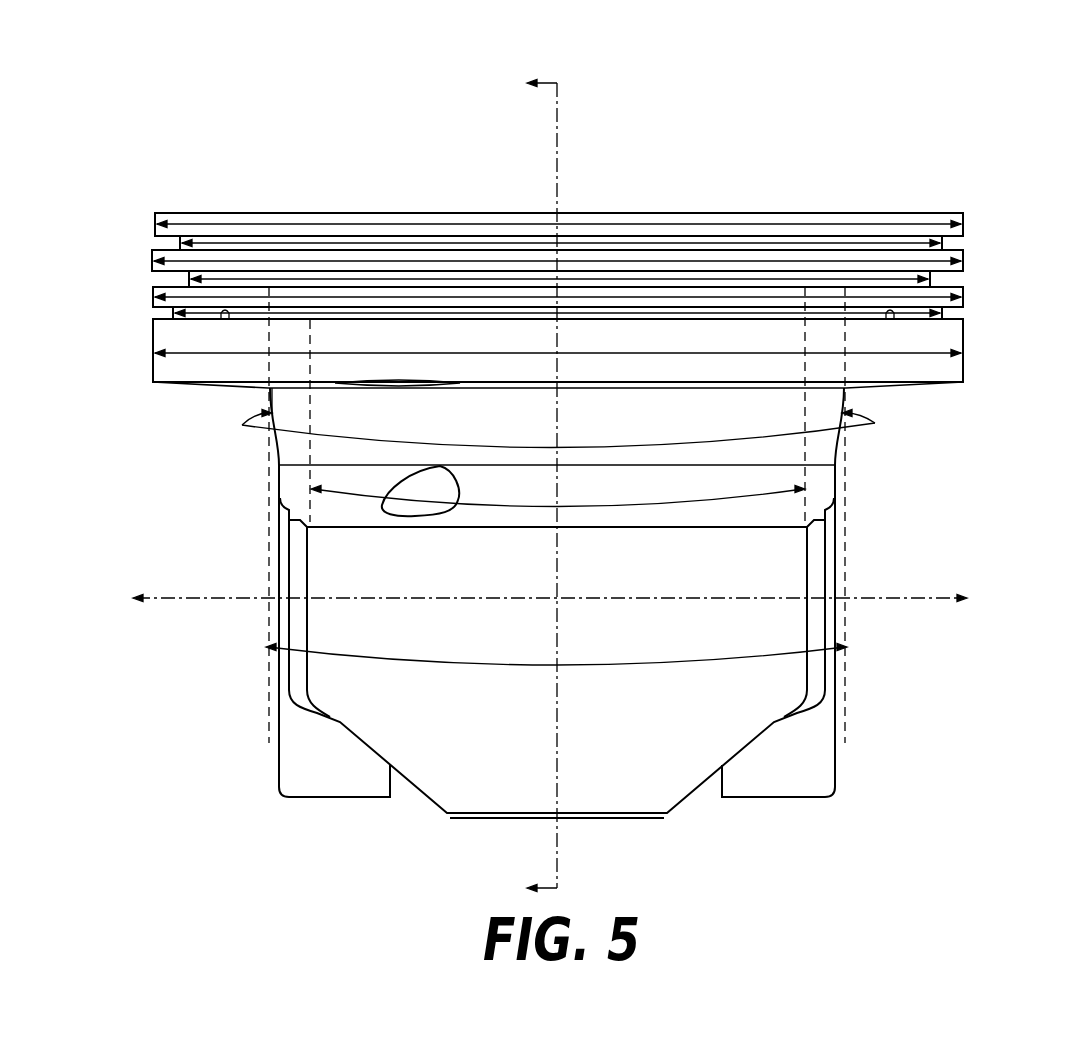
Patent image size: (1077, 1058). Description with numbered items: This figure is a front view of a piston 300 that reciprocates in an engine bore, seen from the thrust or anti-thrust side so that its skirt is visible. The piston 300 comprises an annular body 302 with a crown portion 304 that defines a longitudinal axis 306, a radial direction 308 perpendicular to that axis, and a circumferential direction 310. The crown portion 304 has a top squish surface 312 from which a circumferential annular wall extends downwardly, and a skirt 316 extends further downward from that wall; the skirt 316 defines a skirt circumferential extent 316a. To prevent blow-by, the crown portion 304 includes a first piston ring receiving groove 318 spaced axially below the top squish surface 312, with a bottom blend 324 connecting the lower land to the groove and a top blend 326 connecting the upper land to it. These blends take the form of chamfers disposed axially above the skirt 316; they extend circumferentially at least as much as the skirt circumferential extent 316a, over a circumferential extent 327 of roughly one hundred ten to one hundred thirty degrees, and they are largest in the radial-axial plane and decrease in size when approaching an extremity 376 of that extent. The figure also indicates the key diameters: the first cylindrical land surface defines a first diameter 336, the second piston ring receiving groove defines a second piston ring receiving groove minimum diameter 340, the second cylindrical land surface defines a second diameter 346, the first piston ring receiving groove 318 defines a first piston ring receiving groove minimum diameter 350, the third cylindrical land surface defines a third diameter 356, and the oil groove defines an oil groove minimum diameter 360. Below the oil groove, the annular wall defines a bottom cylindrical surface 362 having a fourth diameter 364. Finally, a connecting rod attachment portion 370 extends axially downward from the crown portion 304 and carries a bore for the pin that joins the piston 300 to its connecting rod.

The piston 300 is at (873, 133).
The annular body 302 is at (457, 200).
The crown portion 304 is at (142, 228).
The longitudinal axis 306 is at (557, 118).
The radial direction 308 is at (913, 605).
The circumferential direction 310 is at (875, 423).
The top squish surface 312 is at (240, 213).
The skirt 316 is at (412, 578).
The skirt circumferential extent 316a is at (690, 503).
The first piston ring receiving groove 318 is at (940, 278).
The bottom blend 324 is at (640, 296).
The top blend 326 is at (633, 270).
The circumferential extent 327 is at (430, 665).
The first diameter 336 is at (813, 223).
The second piston ring receiving groove minimum diameter 340 is at (905, 243).
The second diameter 346 is at (182, 272).
The first piston ring receiving groove minimum diameter 350 is at (900, 298).
The third diameter 356 is at (242, 425).
The oil groove minimum diameter 360 is at (778, 315).
The bottom cylindrical surface 362 is at (963, 365).
The fourth diameter 364 is at (392, 353).
The connecting rod attachment portion 370 is at (778, 803).
The extremity 376 is at (267, 292).